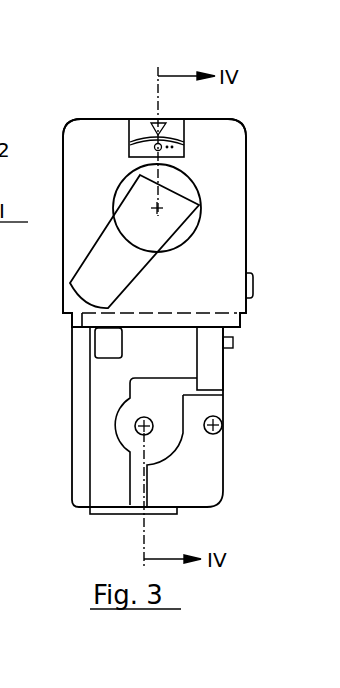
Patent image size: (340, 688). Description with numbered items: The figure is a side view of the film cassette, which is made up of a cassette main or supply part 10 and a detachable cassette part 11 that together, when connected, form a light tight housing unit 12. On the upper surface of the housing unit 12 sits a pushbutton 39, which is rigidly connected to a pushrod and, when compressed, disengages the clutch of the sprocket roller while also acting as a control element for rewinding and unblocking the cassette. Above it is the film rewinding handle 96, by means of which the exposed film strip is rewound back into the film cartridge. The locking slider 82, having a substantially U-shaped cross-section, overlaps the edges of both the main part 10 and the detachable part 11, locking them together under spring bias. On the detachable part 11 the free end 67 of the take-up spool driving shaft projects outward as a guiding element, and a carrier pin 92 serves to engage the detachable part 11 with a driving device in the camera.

The cassette main part 10 is at (96, 123).
The light tight housing unit 12 is at (251, 197).
The film rewinding handle 96 is at (110, 245).
The pushbutton 39 is at (103, 354).
The detachable cassette part 11 is at (208, 468).
The locking slider 82 is at (213, 360).
The free end of driving shaft 67 is at (137, 429).
The carrier pin 92 is at (222, 424).